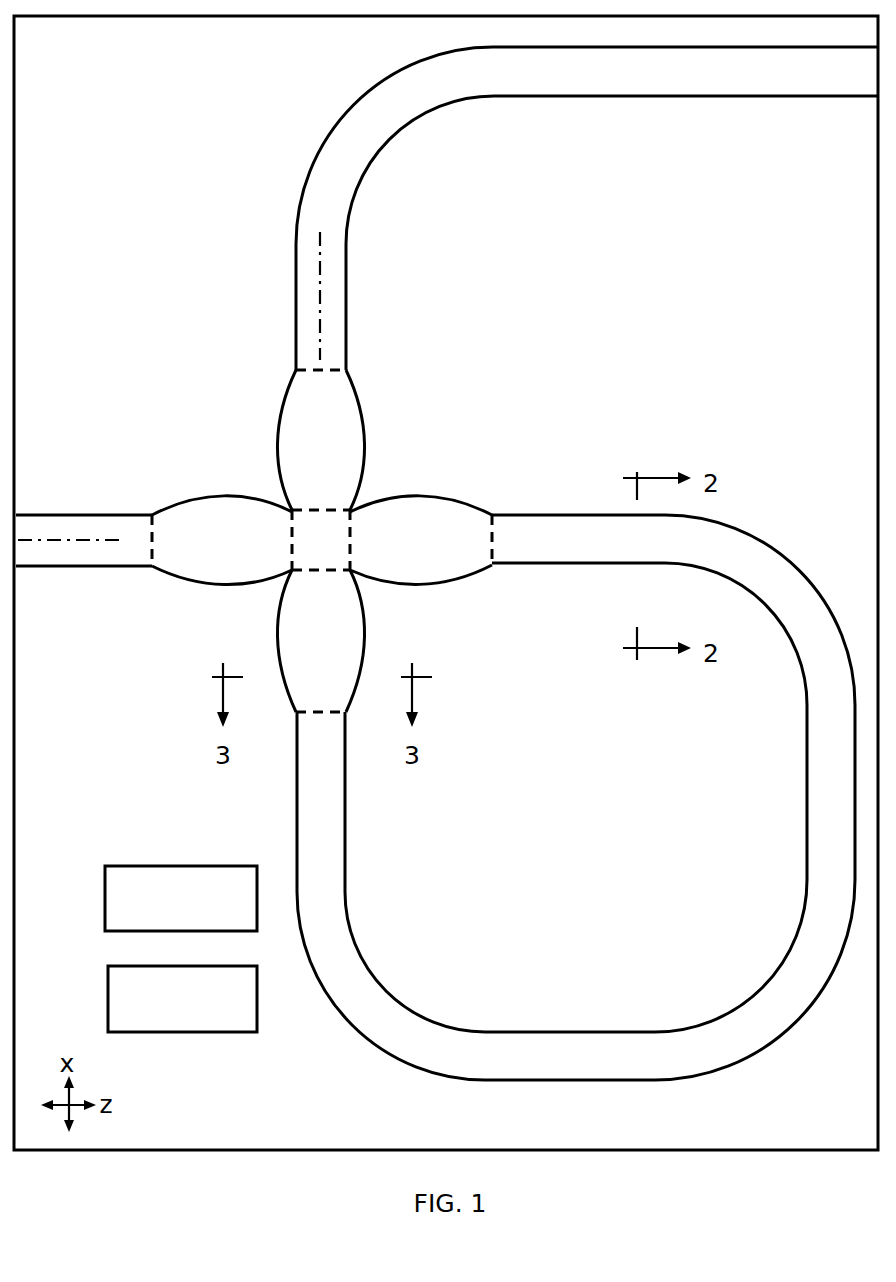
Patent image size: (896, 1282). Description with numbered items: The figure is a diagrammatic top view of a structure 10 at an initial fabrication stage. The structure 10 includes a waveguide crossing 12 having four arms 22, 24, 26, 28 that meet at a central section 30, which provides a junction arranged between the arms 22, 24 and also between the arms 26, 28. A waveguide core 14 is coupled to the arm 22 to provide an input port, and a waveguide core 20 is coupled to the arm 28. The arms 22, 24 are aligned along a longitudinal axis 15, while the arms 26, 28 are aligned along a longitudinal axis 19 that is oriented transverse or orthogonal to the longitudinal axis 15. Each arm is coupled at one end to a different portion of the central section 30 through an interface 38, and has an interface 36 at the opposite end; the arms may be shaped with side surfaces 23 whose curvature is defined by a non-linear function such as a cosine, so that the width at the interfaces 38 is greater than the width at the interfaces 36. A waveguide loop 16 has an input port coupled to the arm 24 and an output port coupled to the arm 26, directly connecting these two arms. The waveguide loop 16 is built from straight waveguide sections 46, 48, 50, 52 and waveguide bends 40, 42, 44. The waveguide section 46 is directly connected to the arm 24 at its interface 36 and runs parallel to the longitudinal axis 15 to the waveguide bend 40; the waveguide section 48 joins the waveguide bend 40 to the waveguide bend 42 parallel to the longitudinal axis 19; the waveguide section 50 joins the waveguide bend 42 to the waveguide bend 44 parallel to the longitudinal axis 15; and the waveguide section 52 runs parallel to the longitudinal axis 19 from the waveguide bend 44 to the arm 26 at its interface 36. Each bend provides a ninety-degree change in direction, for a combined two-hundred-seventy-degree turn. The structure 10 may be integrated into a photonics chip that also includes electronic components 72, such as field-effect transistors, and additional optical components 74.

The structure 10 is at (514, 342).
The waveguide crossing 12 is at (322, 541).
The waveguide core 14 is at (84, 533).
The longitudinal axis 15 is at (20, 540).
The waveguide loop 16 is at (576, 797).
The longitudinal axis 19 is at (320, 273).
The waveguide core 20 is at (568, 208).
The arm 22 is at (190, 558).
The side surfaces 23 is at (437, 498).
The arm 24 is at (463, 558).
The arm 26 is at (293, 624).
The arm 28 is at (297, 430).
The central section 30 is at (320, 532).
The interface 36 is at (319, 373).
The interface 38 is at (312, 508).
The waveguide bend 40 is at (768, 588).
The waveguide bend 42 is at (787, 980).
The waveguide bend 44 is at (362, 974).
The waveguide section 46 is at (557, 547).
The waveguide section 48 is at (806, 780).
The waveguide section 50 is at (529, 1052).
The waveguide section 52 is at (328, 822).
The electronic components 72 is at (108, 990).
The optical components 74 is at (105, 908).